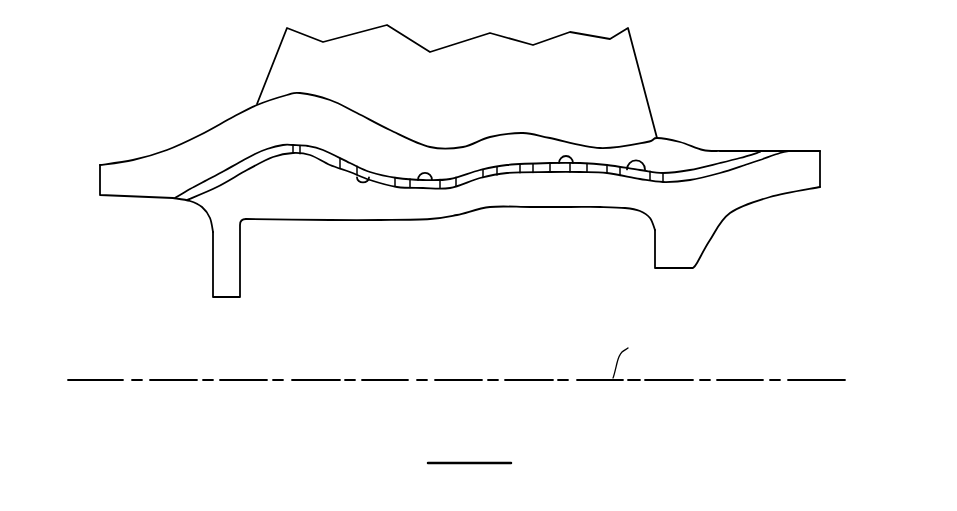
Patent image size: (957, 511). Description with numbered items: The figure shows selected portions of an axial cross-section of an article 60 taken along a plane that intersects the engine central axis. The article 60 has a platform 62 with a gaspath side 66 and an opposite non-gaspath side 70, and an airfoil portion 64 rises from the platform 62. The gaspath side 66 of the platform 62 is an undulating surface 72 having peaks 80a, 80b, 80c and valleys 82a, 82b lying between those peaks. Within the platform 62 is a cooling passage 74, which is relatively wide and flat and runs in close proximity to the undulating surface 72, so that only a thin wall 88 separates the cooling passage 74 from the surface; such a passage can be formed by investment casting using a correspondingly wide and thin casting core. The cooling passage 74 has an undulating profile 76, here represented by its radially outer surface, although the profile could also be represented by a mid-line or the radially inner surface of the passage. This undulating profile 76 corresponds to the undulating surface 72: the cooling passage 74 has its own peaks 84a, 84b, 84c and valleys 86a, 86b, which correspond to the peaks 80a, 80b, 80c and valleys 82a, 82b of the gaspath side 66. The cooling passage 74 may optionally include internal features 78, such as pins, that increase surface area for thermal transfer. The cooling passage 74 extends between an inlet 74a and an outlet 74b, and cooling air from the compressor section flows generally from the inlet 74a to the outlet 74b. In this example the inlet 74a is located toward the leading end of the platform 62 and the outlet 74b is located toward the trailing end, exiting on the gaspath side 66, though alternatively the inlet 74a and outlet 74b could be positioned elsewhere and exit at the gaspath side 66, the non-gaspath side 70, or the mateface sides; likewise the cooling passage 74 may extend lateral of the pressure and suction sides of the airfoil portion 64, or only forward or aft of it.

The article 60 is at (126, 244).
The platform 62 is at (775, 198).
The airfoil portion 64 is at (642, 77).
The gaspath side 66 is at (787, 149).
The non-gaspath side 70 is at (483, 212).
The undulating surface 72 is at (670, 138).
The cooling passage 74 is at (277, 148).
The inlet 74a is at (177, 198).
The outlet 74b is at (757, 149).
The undulating profile 76 is at (323, 148).
The internal features 78 is at (367, 178).
The peak 80a is at (313, 93).
The peak 80b is at (525, 133).
The peak 80c is at (660, 137).
The valley 82a is at (430, 147).
The valley 82b is at (610, 148).
The peak 84a is at (298, 147).
The peak 84b is at (503, 163).
The peak 84c is at (645, 170).
The valley 86a is at (431, 180).
The valley 86b is at (573, 165).
The thin wall 88 is at (383, 153).